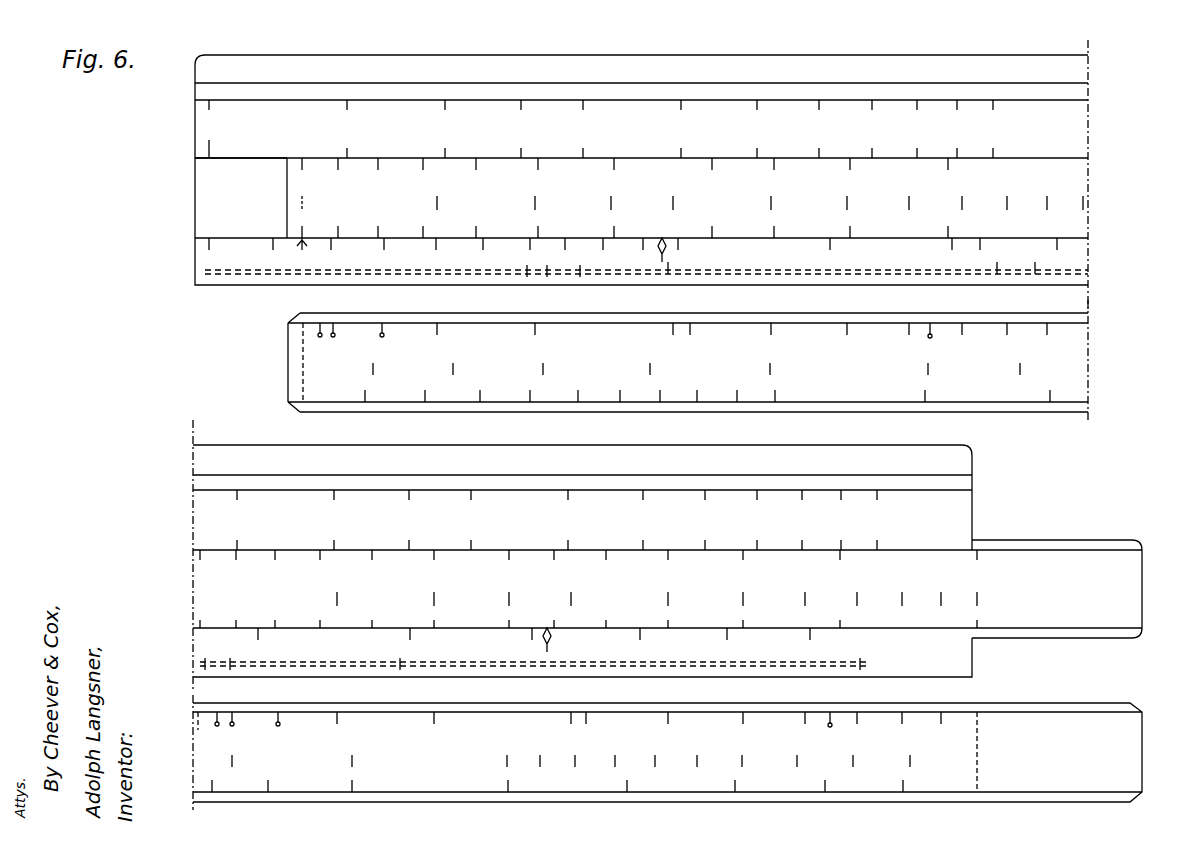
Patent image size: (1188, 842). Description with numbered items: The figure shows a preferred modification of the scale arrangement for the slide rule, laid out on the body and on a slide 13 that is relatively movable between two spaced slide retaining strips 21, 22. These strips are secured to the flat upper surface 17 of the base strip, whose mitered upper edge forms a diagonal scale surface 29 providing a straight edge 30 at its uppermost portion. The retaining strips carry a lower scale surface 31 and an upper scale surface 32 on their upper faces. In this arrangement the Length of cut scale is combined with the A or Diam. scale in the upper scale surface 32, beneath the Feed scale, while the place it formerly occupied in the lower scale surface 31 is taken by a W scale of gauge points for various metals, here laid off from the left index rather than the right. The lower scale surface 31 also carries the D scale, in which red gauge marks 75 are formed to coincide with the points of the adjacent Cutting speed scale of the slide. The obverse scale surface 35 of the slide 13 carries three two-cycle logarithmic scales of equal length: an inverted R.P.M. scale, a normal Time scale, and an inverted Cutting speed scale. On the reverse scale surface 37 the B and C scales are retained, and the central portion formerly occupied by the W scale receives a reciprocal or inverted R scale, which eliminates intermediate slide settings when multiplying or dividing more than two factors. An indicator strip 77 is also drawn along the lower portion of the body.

The slide 13 is at (287, 193).
The upper surface of the base strip 17 is at (212, 169).
The slide retaining strip 21 is at (195, 258).
The slide retaining strip 22 is at (195, 119).
The diagonal scale surface 29 is at (1070, 70).
The straight edge 30 is at (562, 55).
The lower scale surface 31 is at (1070, 257).
The upper scale surface 32 is at (1065, 129).
The obverse scale surface of the slide 35 is at (1065, 212).
The reverse scale surface of the slide 37 is at (1050, 361).
The gauge marks 75 is at (662, 262).
The indicator strip 77 is at (248, 285).